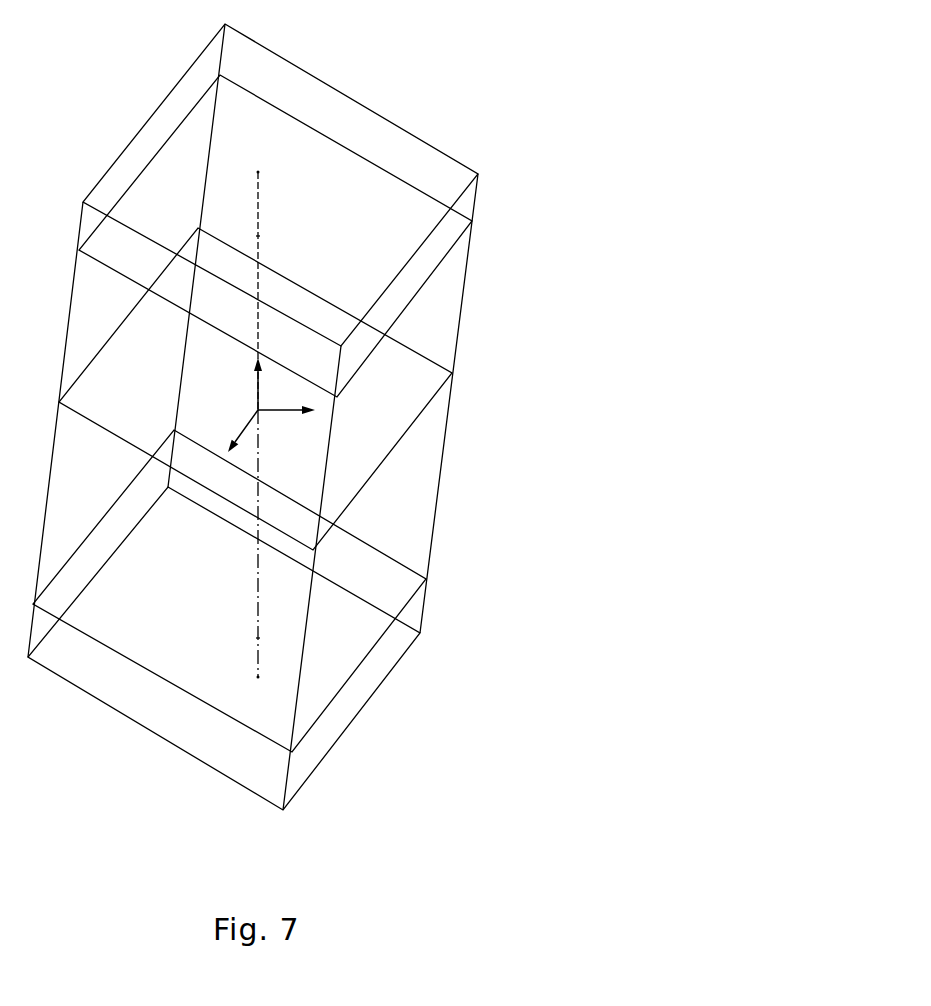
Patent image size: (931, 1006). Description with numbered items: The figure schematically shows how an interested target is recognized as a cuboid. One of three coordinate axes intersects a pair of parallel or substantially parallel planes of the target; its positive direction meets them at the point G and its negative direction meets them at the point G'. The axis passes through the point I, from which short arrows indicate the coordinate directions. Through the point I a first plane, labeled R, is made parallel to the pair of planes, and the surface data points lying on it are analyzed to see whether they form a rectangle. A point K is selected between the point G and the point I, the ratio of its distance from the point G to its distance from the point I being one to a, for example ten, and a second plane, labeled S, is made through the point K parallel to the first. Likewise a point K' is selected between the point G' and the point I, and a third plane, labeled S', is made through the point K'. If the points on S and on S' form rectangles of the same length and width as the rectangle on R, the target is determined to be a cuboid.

The plane S is at (333, 210).
The plane R is at (391, 382).
The plane S' is at (289, 620).
The point G is at (267, 174).
The point K is at (264, 236).
The point I is at (271, 405).
The point K' is at (248, 639).
The point G' is at (246, 676).